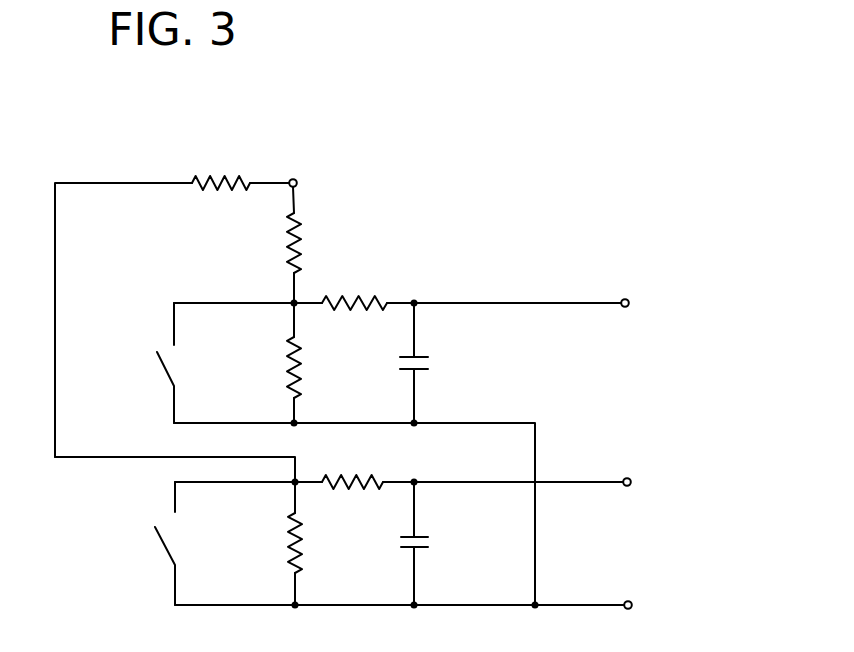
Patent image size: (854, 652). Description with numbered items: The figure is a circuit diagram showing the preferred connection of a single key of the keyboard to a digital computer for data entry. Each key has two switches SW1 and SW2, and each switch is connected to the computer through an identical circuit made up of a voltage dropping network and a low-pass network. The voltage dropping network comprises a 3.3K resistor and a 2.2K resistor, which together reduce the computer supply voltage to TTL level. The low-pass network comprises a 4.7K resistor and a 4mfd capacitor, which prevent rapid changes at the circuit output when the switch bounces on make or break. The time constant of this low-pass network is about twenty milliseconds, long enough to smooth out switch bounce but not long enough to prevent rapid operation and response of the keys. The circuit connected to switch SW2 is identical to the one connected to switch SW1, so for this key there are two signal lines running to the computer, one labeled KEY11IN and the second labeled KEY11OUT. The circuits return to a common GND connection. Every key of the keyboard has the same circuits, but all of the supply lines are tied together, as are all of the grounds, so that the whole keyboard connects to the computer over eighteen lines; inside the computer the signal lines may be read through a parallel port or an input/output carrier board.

The switch SW1 is at (145, 363).
The switch SW2 is at (146, 543).
The 3.3K resistor 3.3K is at (246, 207).
The 4.7K resistor 4.7K is at (355, 379).
The 2.2K resistor 2.2K is at (265, 455).
The 4 microfarad capacitor 4mfd is at (454, 454).
The Key 11 in signal line KEY11IN is at (576, 301).
The Key 11 out signal line KEY11OUT is at (585, 481).
The ground GND is at (427, 604).